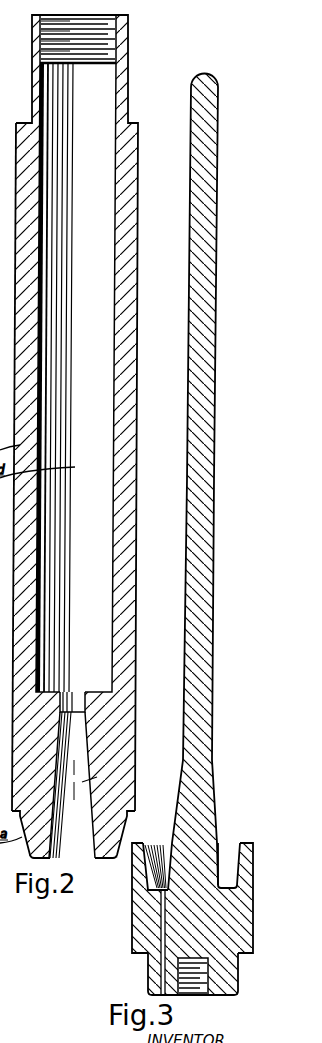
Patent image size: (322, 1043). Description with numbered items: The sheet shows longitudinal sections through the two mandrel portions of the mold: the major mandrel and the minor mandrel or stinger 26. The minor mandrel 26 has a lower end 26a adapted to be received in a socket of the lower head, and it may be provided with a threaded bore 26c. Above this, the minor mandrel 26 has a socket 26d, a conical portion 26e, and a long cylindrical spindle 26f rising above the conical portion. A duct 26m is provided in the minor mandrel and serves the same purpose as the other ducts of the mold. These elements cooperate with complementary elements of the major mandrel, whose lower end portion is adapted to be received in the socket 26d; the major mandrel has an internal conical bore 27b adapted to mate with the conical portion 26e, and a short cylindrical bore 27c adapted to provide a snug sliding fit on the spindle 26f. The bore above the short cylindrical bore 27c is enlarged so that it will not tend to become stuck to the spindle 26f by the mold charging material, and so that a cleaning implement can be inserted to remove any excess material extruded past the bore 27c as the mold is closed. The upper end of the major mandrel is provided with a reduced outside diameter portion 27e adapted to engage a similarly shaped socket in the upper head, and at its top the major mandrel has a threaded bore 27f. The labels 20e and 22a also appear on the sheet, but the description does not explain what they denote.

In FIG. 2, the reduced outside diameter portion 27e is at (121, 79).
In FIG. 2, the threaded bore 27f is at (125, 40).
In FIG. 2, the short cylindrical bore 27c is at (78, 705).
In FIG. 2, the internal conical bore 27b is at (122, 750).
In FIG. 2, the light guide element 20e is at (0, 947).
In FIG. 2, the light guide element 22a is at (0, 975).
In FIG. 3, the minor mandrel 26 is at (253, 878).
In FIG. 3, the long cylindrical spindle 26f is at (208, 163).
In FIG. 3, the conical portion 26e is at (204, 793).
In FIG. 3, the socket 26d is at (260, 820).
In FIG. 3, the duct 26m is at (160, 921).
In FIG. 3, the lower end 26a is at (240, 965).
In FIG. 3, the threaded bore 26c is at (200, 977).